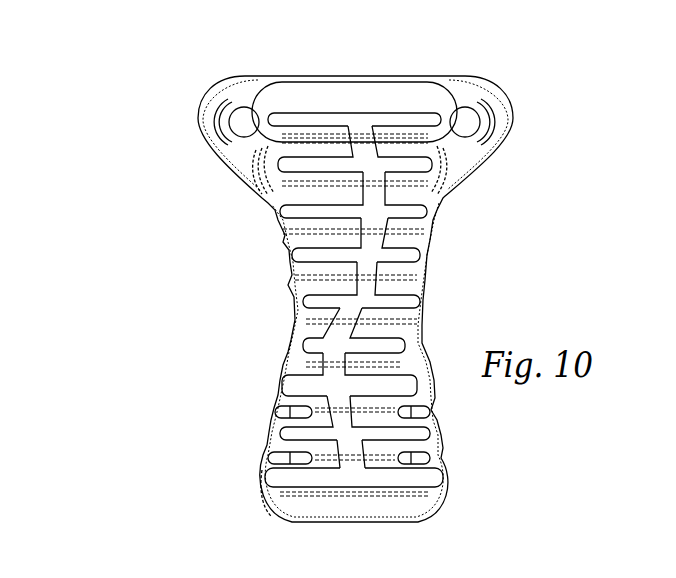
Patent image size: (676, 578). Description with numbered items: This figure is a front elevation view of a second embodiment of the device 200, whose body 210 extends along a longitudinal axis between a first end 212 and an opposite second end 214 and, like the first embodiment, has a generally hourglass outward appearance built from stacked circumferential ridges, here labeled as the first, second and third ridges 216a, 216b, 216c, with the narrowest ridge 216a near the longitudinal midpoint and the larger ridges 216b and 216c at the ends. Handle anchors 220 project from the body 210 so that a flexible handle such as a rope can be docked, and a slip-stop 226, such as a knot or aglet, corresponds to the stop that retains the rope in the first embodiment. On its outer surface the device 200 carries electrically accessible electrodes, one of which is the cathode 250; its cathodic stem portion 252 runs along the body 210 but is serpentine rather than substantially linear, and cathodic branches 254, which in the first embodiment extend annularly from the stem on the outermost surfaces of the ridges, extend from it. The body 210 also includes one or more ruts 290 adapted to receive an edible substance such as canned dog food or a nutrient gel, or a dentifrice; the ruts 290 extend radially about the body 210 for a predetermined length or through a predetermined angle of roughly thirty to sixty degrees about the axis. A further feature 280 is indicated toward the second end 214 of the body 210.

The device 200 is at (155, 103).
The body 210 is at (458, 166).
The first end 212 is at (287, 520).
The second end 214 is at (292, 75).
The intermediate portion 216a is at (430, 310).
The first transition portion 216b is at (232, 167).
The second transition portion 216c is at (253, 488).
The lug 220 is at (200, 107).
The pin hole 226 is at (468, 128).
The cathode 250 is at (330, 389).
The stem portion 252 is at (340, 330).
The slots 254 is at (307, 298).
The end slot 280 is at (355, 478).
The ruts 290 is at (285, 413).